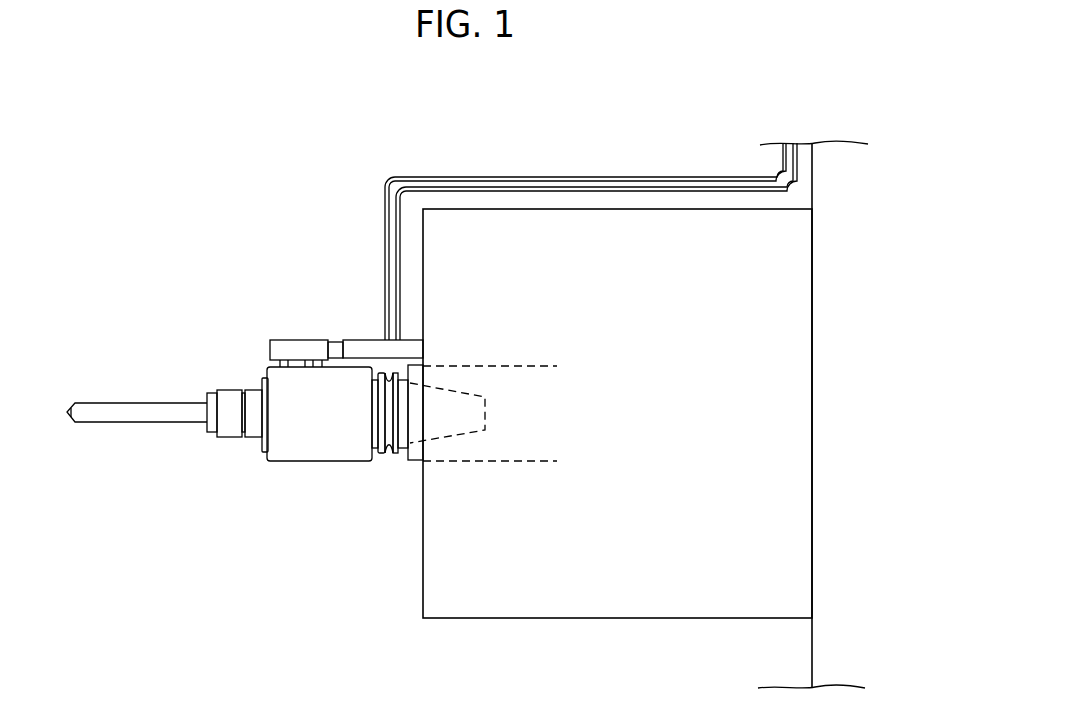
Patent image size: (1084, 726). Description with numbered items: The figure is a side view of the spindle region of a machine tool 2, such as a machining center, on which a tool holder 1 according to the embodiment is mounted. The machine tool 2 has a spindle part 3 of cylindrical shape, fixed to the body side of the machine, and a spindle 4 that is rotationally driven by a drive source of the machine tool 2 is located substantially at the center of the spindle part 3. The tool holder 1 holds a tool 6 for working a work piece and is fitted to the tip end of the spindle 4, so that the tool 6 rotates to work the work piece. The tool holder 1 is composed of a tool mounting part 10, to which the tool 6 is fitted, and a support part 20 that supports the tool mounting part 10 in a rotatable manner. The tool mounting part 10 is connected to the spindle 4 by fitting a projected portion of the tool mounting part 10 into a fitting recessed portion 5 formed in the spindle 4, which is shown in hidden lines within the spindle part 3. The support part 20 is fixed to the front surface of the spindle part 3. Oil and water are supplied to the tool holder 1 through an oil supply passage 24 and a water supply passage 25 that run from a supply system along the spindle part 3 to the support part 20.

The tool holder 1 is at (245, 366).
The machine tool 2 is at (832, 648).
The spindle part 3 is at (512, 605).
The spindle 4 is at (503, 366).
The fitting recessed portion 5 is at (455, 437).
The tool 6 is at (135, 410).
The tool mounting part 10 is at (253, 393).
The support part 20 is at (293, 375).
The oil supply passage 24 is at (548, 189).
The water supply passage 25 is at (470, 177).